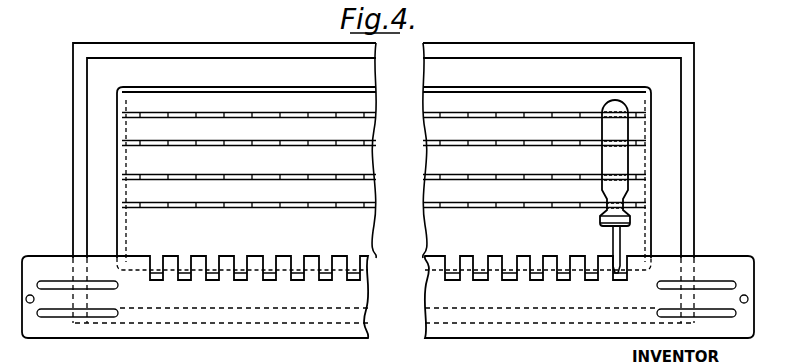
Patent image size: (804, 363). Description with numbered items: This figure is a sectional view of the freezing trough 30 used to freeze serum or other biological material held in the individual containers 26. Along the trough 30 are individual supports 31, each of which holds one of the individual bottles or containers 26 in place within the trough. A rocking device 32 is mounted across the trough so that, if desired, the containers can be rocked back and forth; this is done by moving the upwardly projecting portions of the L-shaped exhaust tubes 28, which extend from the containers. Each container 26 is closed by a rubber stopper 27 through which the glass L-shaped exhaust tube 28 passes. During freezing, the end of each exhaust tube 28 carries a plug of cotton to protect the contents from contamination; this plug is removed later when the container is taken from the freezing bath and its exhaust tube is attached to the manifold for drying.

The individual container 26 is at (619, 162).
The rubber stopper 27 is at (630, 222).
The L-shaped exhaust tube 28 is at (612, 268).
The freezing trough 30 is at (696, 67).
The individual support 31 is at (480, 148).
The rocking device 32 is at (258, 333).